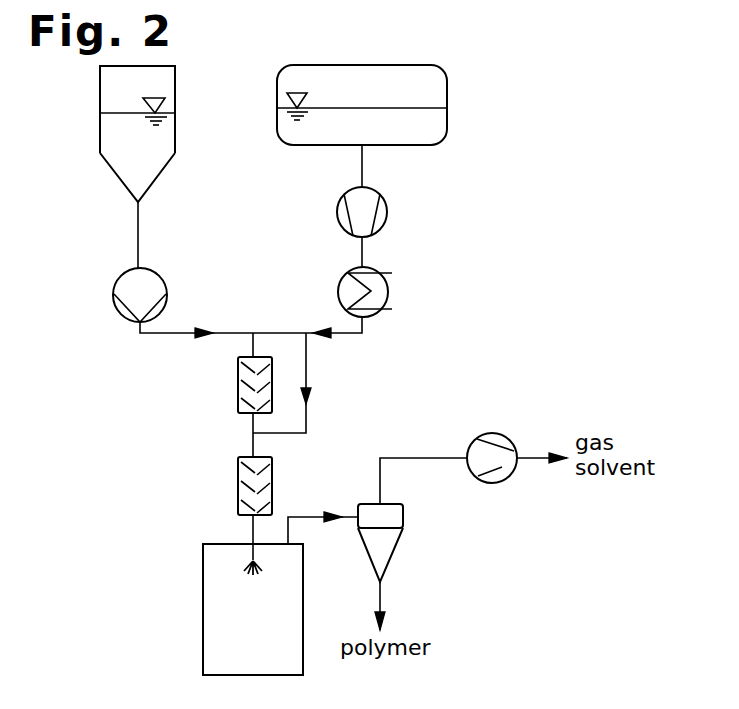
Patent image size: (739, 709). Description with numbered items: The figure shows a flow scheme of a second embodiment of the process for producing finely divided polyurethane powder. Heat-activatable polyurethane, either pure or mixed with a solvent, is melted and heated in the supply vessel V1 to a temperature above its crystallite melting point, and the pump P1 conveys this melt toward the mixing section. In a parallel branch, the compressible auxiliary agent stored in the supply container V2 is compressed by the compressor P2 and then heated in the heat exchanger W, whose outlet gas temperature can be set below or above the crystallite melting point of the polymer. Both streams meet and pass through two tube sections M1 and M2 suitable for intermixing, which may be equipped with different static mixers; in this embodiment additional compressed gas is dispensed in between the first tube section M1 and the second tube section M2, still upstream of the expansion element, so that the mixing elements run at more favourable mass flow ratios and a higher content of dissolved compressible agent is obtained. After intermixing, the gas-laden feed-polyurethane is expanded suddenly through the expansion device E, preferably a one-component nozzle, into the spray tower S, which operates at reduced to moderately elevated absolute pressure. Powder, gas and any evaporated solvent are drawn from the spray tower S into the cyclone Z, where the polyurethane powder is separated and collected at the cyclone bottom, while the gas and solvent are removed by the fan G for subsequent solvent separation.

The supply vessel V1 is at (118, 134).
The supply container V2 is at (383, 105).
The pump P1 is at (122, 295).
The compressor P2 is at (344, 212).
The heat exchanger W is at (350, 292).
The first tube section M1 is at (232, 385).
The second tube section M2 is at (232, 486).
The spray tower S is at (240, 609).
The expansion device E is at (253, 583).
The cyclone Z is at (392, 543).
The fan G is at (492, 446).